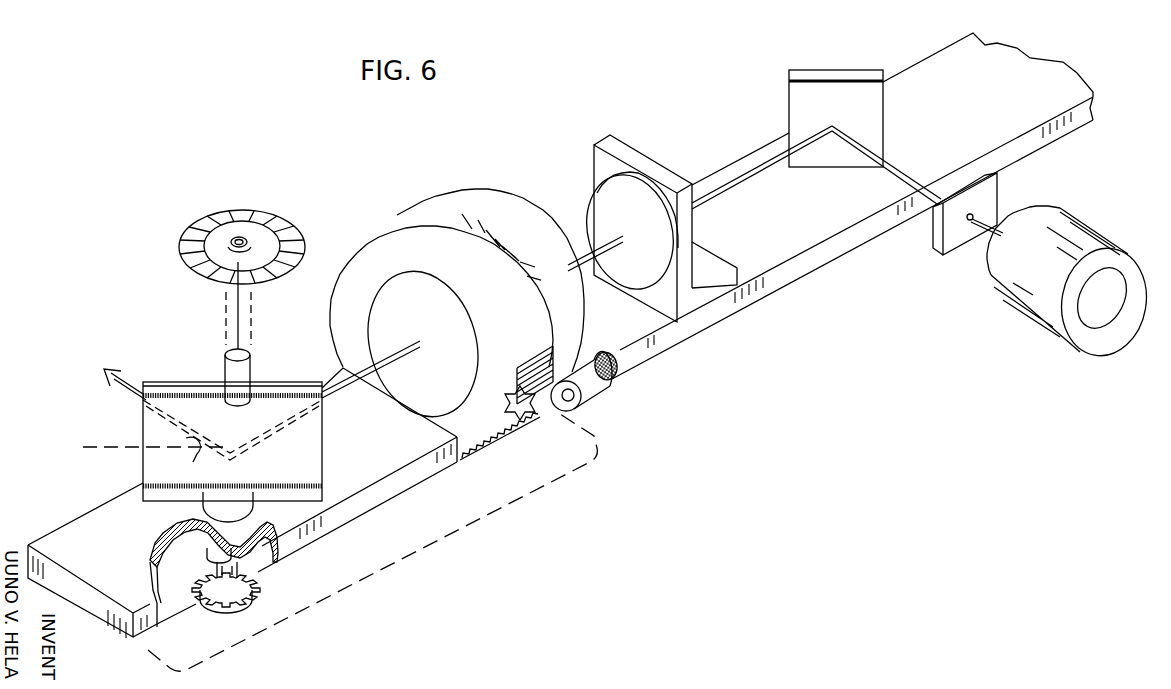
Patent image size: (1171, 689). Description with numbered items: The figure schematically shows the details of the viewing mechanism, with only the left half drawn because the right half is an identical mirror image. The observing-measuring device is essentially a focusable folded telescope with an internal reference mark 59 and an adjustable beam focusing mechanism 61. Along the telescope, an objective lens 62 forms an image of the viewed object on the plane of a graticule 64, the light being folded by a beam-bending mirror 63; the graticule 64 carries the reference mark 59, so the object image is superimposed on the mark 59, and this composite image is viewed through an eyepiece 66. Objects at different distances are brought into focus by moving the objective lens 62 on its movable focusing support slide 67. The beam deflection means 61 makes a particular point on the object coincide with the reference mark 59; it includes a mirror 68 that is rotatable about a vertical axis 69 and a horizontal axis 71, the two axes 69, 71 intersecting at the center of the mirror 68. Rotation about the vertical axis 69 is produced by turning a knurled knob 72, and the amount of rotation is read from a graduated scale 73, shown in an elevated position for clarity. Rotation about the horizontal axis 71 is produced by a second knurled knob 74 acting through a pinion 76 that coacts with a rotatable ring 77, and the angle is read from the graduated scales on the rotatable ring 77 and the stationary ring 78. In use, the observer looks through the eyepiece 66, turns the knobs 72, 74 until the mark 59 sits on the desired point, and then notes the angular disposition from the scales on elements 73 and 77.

The reference mark 59 is at (967, 220).
The beam focusing mechanism 61 is at (440, 543).
The objective lens 62 is at (588, 212).
The beam-bending mirror 63 is at (789, 100).
The graticule 64 is at (997, 198).
The eyepiece 66 is at (1080, 243).
The focusing support slide 67 is at (713, 265).
The mirror 68 is at (143, 420).
The vertical axis 69 is at (239, 316).
The horizontal axis 71 is at (107, 447).
The knurled knob 72 is at (253, 592).
The graduated scale 73 is at (267, 217).
The knurled knob 74 is at (613, 383).
The pinion 76 is at (538, 414).
The rotatable ring 77 is at (397, 216).
The stationary ring 78 is at (456, 193).